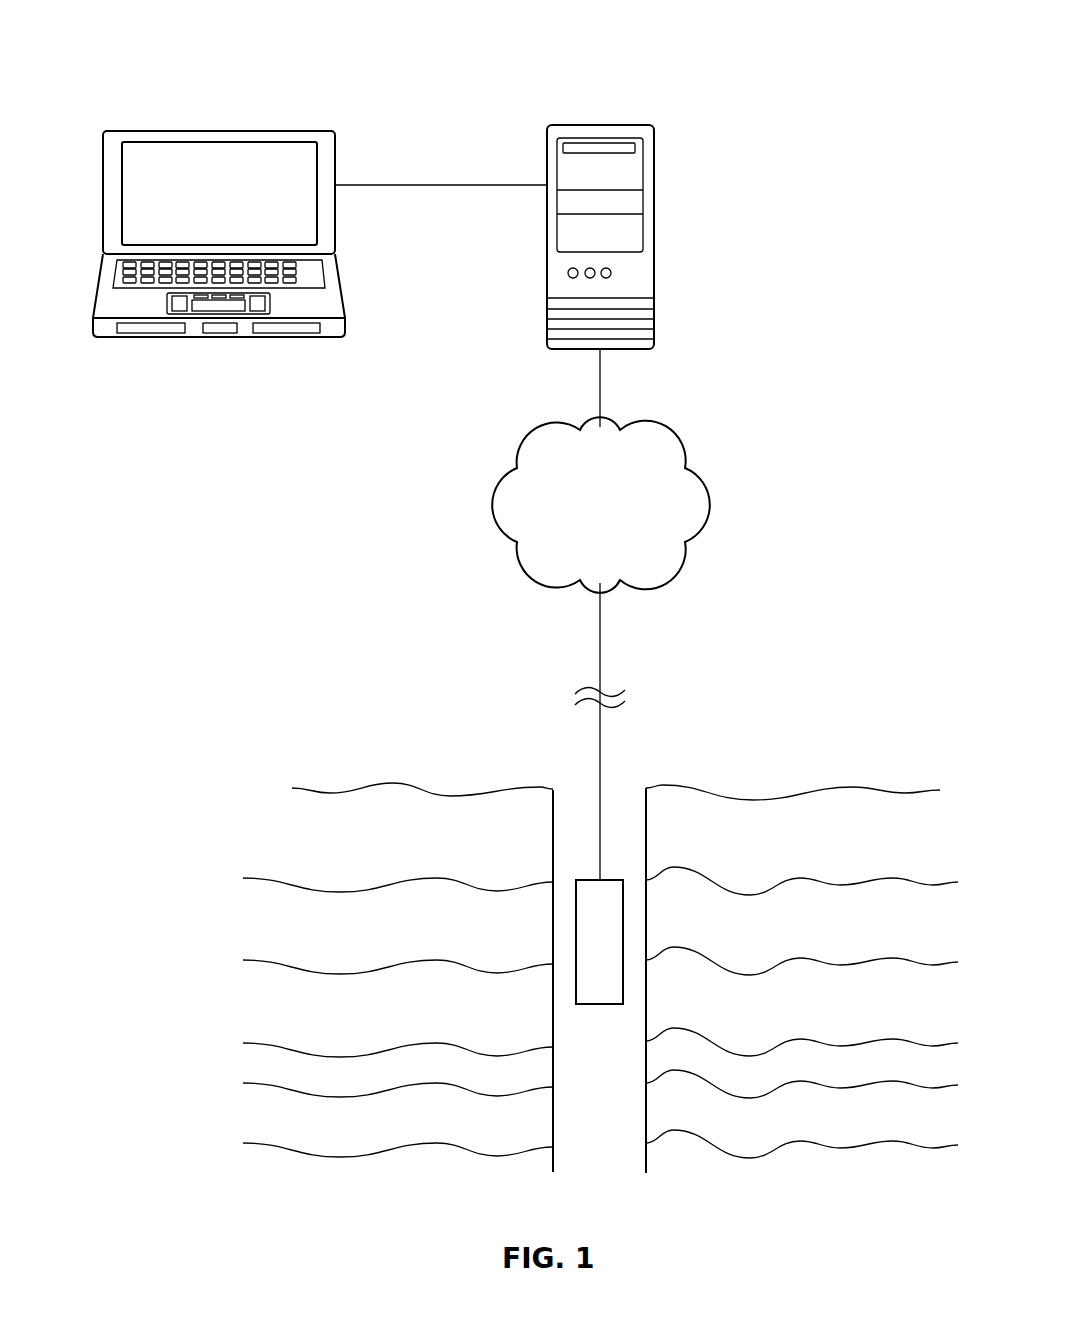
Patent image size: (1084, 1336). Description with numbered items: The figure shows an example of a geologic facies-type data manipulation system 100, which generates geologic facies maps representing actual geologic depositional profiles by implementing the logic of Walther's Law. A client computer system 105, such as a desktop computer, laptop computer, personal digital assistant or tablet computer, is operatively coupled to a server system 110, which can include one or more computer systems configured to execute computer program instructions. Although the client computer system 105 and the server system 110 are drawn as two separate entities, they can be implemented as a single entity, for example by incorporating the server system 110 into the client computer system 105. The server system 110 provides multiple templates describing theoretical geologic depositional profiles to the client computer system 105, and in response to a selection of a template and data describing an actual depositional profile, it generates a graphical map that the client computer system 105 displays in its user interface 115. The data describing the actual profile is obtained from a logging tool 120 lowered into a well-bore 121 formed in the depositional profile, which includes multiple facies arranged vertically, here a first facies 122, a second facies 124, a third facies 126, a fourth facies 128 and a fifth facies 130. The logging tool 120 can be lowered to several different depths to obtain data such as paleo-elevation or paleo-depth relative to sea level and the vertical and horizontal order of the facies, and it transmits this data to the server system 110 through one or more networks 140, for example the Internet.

The geologic facies-type data manipulation system 100 is at (138, 36).
The client computer system 105 is at (344, 302).
The server system 110 is at (654, 208).
The user interface 115 is at (262, 137).
The logging tool 120 is at (612, 878).
The well-bore 121 is at (646, 840).
The first facies 122 is at (836, 850).
The second facies 124 is at (838, 933).
The third facies 126 is at (838, 1013).
The fourth facies 128 is at (838, 1075).
The fifth facies 130 is at (838, 1127).
The networks 140 is at (626, 518).